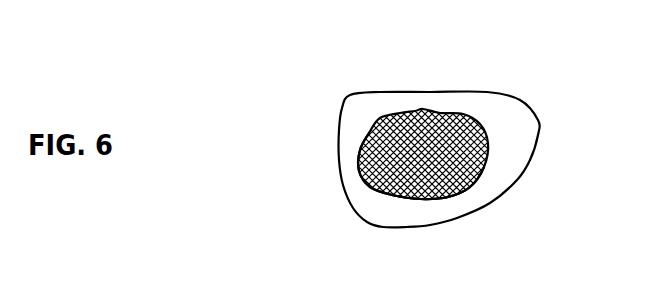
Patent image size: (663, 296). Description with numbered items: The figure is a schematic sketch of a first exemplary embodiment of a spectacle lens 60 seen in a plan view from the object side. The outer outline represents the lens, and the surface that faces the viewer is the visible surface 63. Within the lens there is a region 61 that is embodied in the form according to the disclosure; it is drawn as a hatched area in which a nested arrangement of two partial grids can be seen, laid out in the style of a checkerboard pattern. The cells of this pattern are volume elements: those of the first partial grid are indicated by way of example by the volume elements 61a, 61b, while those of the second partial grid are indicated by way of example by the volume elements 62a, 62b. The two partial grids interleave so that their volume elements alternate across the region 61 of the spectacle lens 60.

The spectacle lens 60 is at (530, 94).
The region 61 is at (445, 110).
The volume element of the first partial grid 61a is at (440, 198).
The volume element of the first partial grid 61b is at (442, 196).
The volume element of the second partial grid 62a is at (397, 197).
The volume element of the second partial grid 62b is at (413, 197).
The visible surface 63 is at (350, 177).